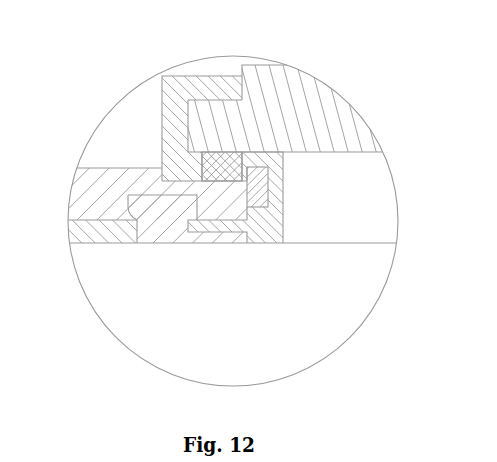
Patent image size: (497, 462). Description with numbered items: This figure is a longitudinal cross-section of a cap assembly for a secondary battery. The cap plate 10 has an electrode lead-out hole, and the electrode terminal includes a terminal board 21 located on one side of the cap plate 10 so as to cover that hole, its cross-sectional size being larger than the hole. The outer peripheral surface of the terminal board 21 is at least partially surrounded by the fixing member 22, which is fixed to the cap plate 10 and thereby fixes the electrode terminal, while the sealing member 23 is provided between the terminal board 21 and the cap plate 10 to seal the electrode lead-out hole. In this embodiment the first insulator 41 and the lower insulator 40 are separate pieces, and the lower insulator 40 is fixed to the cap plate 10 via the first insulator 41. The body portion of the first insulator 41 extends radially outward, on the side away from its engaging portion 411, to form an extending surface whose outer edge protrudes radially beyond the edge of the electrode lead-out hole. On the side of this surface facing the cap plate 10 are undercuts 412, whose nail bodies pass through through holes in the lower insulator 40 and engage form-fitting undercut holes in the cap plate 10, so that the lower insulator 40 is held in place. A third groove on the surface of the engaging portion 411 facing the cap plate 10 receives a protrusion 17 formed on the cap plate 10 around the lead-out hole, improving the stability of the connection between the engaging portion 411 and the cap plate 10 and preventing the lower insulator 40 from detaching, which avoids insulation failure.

The cap plate 10 is at (100, 197).
The protrusion 17 is at (258, 175).
The terminal board 21 is at (273, 92).
The fixing member 22 is at (170, 112).
The sealing member 23 is at (212, 165).
The lower insulator 40 is at (113, 232).
The first insulator 41 is at (279, 192).
The engaging portion 411 is at (272, 133).
The undercuts 412 is at (160, 207).